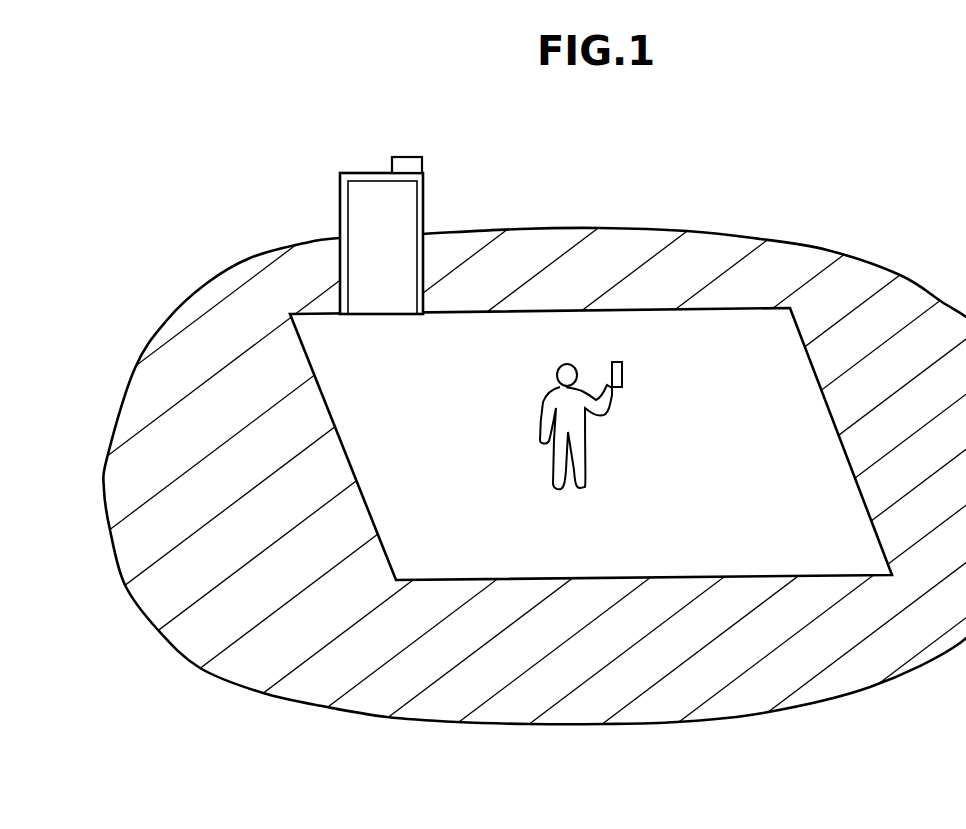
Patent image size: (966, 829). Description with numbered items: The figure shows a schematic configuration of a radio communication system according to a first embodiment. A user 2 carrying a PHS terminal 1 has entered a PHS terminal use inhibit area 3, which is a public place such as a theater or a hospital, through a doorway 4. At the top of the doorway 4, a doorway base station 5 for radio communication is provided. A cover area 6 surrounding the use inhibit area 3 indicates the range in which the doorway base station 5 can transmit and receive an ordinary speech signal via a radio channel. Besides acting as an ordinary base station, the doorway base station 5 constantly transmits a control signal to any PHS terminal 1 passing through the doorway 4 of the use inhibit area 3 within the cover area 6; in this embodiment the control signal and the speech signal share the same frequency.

The PHS terminal 1 is at (623, 378).
The user 2 is at (556, 373).
The PHS terminal use inhibit area 3 is at (660, 327).
The doorway 4 is at (425, 263).
The doorway base station 5 is at (423, 167).
The cover area 6 is at (752, 690).